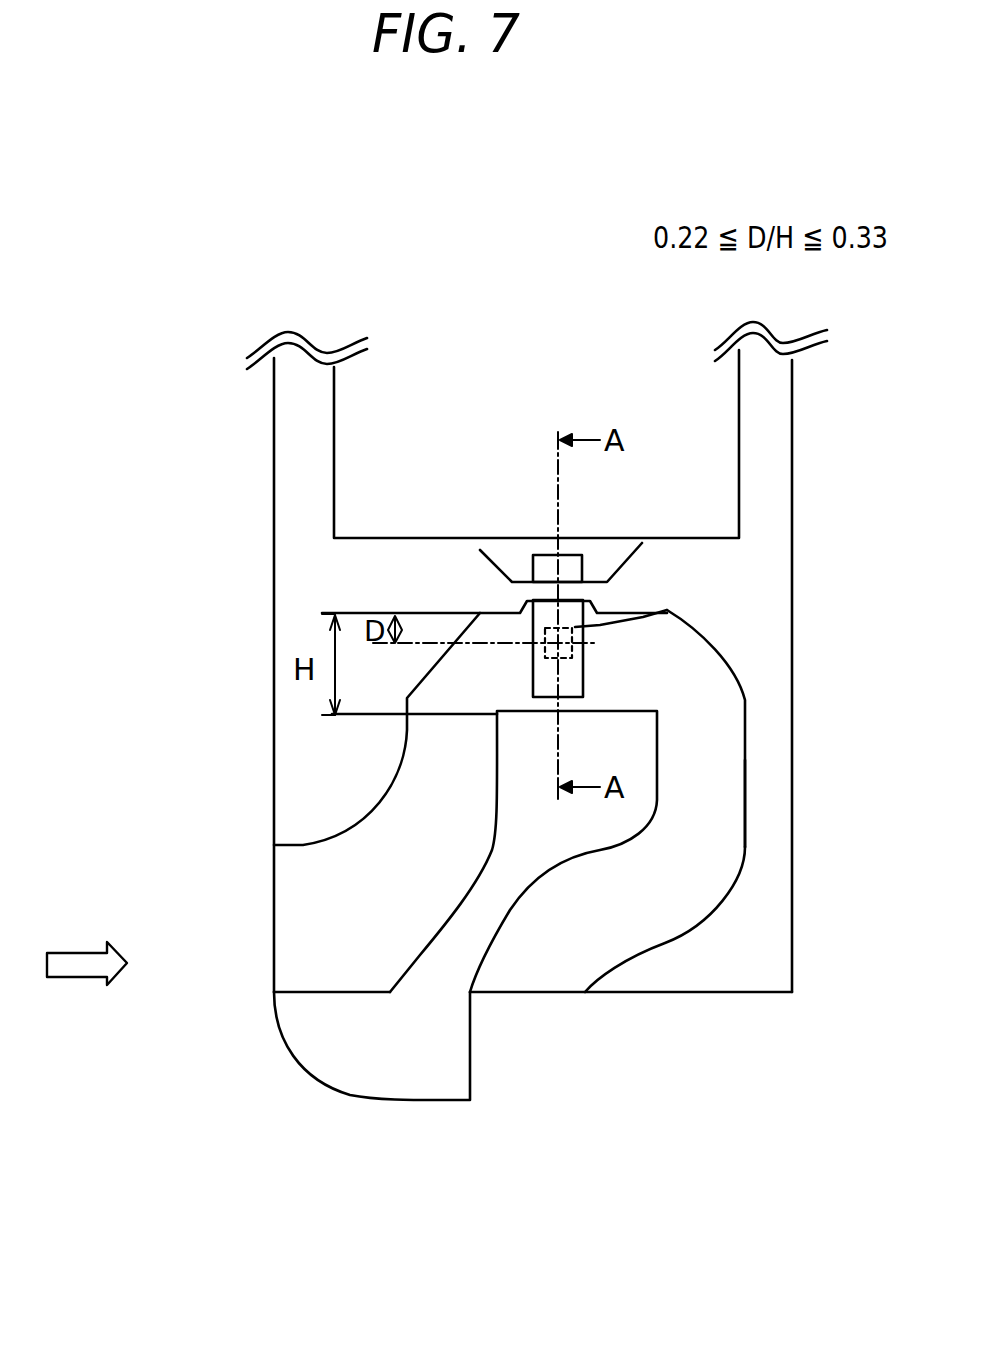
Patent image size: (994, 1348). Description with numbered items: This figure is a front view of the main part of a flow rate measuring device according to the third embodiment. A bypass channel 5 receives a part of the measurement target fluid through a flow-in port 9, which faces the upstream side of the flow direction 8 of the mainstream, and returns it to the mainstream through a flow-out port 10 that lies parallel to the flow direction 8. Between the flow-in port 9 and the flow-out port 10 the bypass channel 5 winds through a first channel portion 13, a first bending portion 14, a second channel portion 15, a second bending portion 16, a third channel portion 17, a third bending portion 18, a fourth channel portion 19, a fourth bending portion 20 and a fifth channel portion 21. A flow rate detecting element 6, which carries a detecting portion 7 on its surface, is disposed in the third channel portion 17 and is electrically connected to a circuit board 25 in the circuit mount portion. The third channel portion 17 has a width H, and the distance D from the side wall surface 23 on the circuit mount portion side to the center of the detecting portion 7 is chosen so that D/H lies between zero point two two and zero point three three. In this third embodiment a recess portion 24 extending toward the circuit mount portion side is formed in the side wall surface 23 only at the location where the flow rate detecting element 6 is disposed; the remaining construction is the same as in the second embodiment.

The bypass channel 5 is at (418, 723).
The flow rate detecting element 6 is at (604, 466).
The detecting portion 7 is at (720, 623).
The flow direction 8 is at (87, 998).
The flow-in port 9 is at (479, 676).
The flow-out port 10 is at (533, 1045).
The first channel portion 13 is at (338, 1035).
The first bending portion 14 is at (523, 930).
The second channel portion 15 is at (346, 737).
The second bending portion 16 is at (520, 584).
The third channel portion 17 is at (607, 582).
The third bending portion 18 is at (782, 728).
The fourth channel portion 19 is at (804, 803).
The fourth bending portion 20 is at (746, 919).
The fifth channel portion 21 is at (672, 997).
The side wall surface 23 is at (550, 542).
The recess portion 24 is at (579, 569).
The circuit board 25 is at (280, 662).